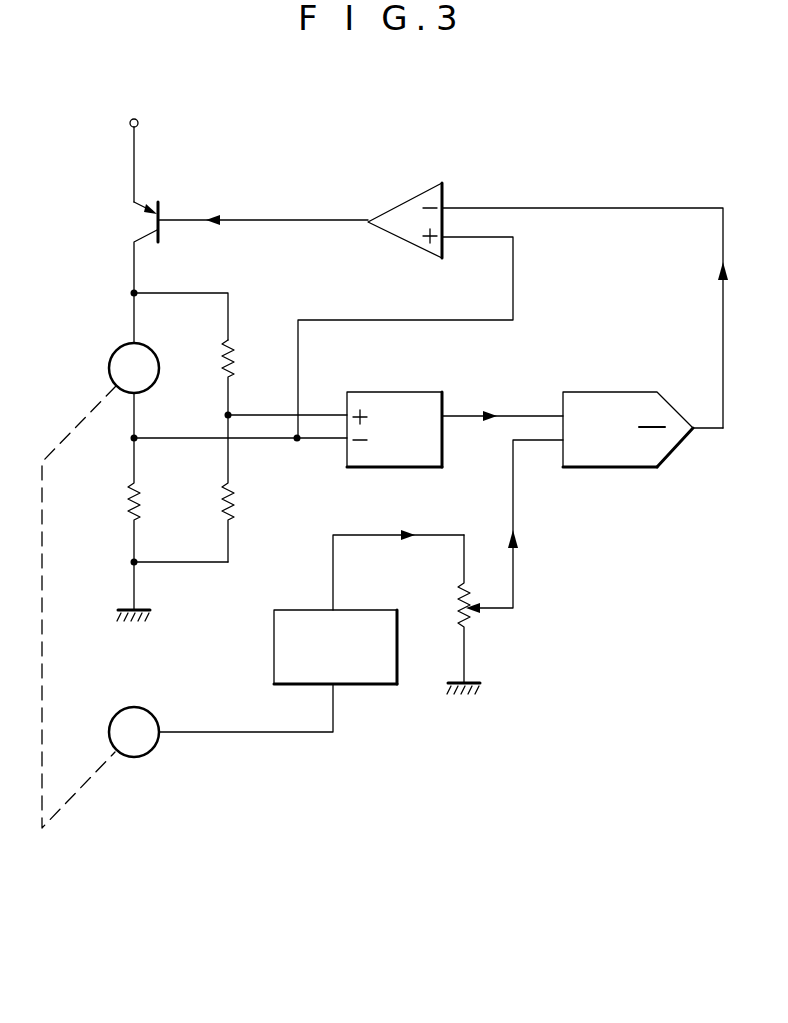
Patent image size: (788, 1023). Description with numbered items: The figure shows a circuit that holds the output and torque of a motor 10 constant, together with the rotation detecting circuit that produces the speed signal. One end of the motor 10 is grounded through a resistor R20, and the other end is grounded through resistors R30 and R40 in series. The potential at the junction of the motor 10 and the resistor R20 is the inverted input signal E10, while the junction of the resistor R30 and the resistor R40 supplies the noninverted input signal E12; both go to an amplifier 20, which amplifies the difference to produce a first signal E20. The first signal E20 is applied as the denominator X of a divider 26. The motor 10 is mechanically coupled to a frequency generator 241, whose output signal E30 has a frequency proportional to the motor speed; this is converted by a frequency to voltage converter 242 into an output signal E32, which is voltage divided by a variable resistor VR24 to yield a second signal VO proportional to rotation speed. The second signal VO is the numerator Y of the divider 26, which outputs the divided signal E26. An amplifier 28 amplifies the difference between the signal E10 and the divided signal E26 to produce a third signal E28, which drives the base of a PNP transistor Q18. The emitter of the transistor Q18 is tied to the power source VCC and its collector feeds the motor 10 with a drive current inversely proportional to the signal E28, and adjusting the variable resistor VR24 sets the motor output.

The motor 10 is at (113, 353).
The PNP transistor Q18 is at (144, 201).
The power source +Vcc VCC is at (133, 147).
The third signal E28 is at (295, 217).
The amplifier 28 is at (393, 206).
The resistor R20 is at (128, 493).
The resistor R30 is at (232, 357).
The resistor R40 is at (220, 505).
The noninverted input signal E12 is at (229, 419).
The inverted input signal E10 is at (297, 442).
The amplifier 20 is at (397, 392).
The first signal E20 is at (459, 414).
The divider 26 is at (614, 392).
The divided signal E26 is at (722, 330).
The second signal VO is at (515, 561).
The variable resistor VR24 is at (470, 628).
The output signal of the converter E32 is at (437, 535).
The frequency to voltage converter 242 is at (374, 685).
The frequency generator 241 is at (137, 753).
The output signal of the frequency generator E30 is at (270, 735).